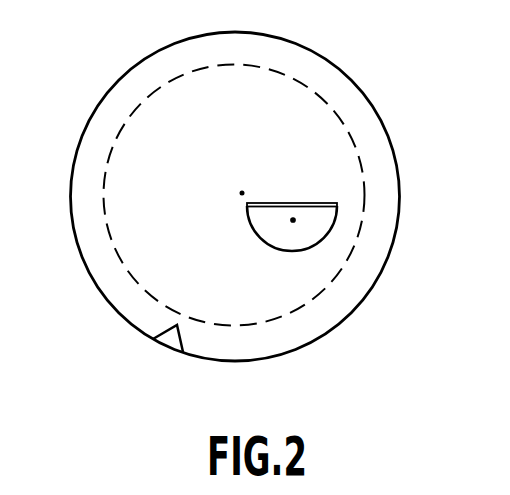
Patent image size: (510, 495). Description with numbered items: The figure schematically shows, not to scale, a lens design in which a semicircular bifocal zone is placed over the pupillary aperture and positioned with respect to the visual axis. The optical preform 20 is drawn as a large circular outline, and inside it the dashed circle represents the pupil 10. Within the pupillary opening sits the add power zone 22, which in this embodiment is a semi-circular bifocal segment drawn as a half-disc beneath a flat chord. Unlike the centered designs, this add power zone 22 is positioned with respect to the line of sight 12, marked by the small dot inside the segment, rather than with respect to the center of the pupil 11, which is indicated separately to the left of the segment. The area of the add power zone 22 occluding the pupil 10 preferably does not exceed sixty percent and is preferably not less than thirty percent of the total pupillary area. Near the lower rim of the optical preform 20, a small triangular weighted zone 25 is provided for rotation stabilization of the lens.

The pupil 10 is at (136, 108).
The center of the pupil 11 is at (242, 193).
The line of sight 12 is at (303, 217).
The optical preform 20 is at (360, 290).
The add power zone 22 is at (275, 203).
The weighted zone 25 is at (162, 334).